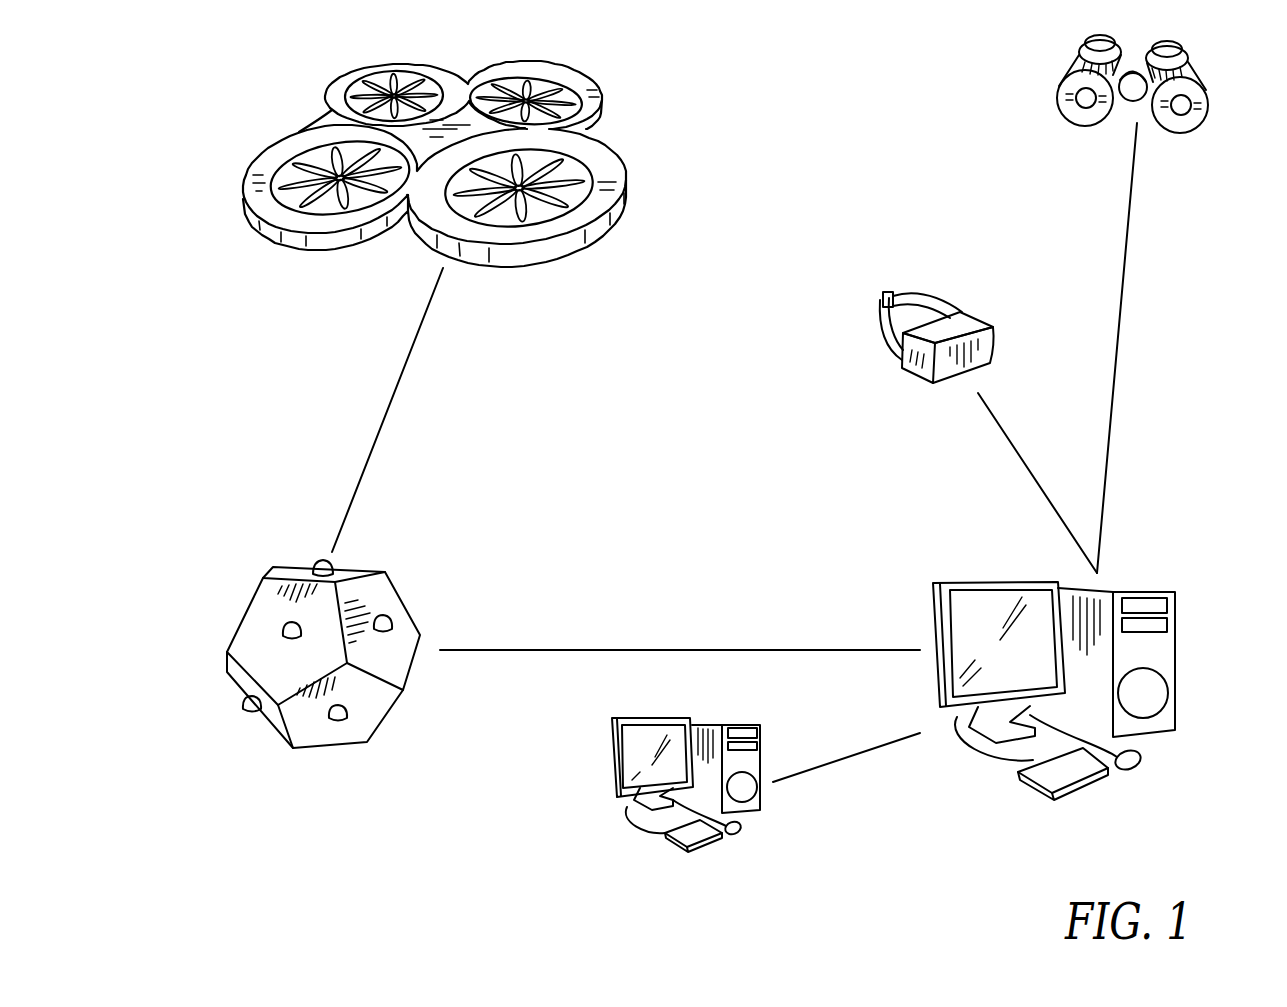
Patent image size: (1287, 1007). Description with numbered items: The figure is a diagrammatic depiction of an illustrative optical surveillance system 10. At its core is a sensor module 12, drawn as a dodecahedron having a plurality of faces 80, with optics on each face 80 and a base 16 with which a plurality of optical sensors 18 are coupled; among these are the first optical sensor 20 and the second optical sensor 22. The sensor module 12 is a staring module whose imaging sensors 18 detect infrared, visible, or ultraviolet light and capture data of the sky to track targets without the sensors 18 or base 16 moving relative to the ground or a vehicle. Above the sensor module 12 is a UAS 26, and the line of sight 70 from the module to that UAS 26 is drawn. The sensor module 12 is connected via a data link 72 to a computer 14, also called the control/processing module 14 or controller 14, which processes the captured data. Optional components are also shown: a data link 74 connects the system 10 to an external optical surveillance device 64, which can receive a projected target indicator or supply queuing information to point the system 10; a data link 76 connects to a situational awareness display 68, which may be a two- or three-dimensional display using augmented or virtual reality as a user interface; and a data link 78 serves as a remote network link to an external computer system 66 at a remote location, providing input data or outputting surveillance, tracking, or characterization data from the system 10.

The optical surveillance system 10 is at (857, 157).
The sensor module 12 is at (327, 629).
The computer 14 is at (1193, 650).
The base 16 is at (289, 733).
The optical sensors 18 is at (282, 622).
The first optical sensor 20 is at (334, 553).
The second optical sensor 22 is at (385, 614).
The UAS 26 is at (318, 120).
The external optical surveillance device 64 is at (1036, 87).
The external computer system 66 is at (601, 798).
The situational awareness display 68 is at (860, 303).
The line of sight 70 is at (388, 408).
The data link 72 is at (690, 648).
The data link 74 is at (1127, 290).
The data link 76 is at (1008, 443).
The data link 78 is at (855, 752).
The faces 80 is at (364, 704).